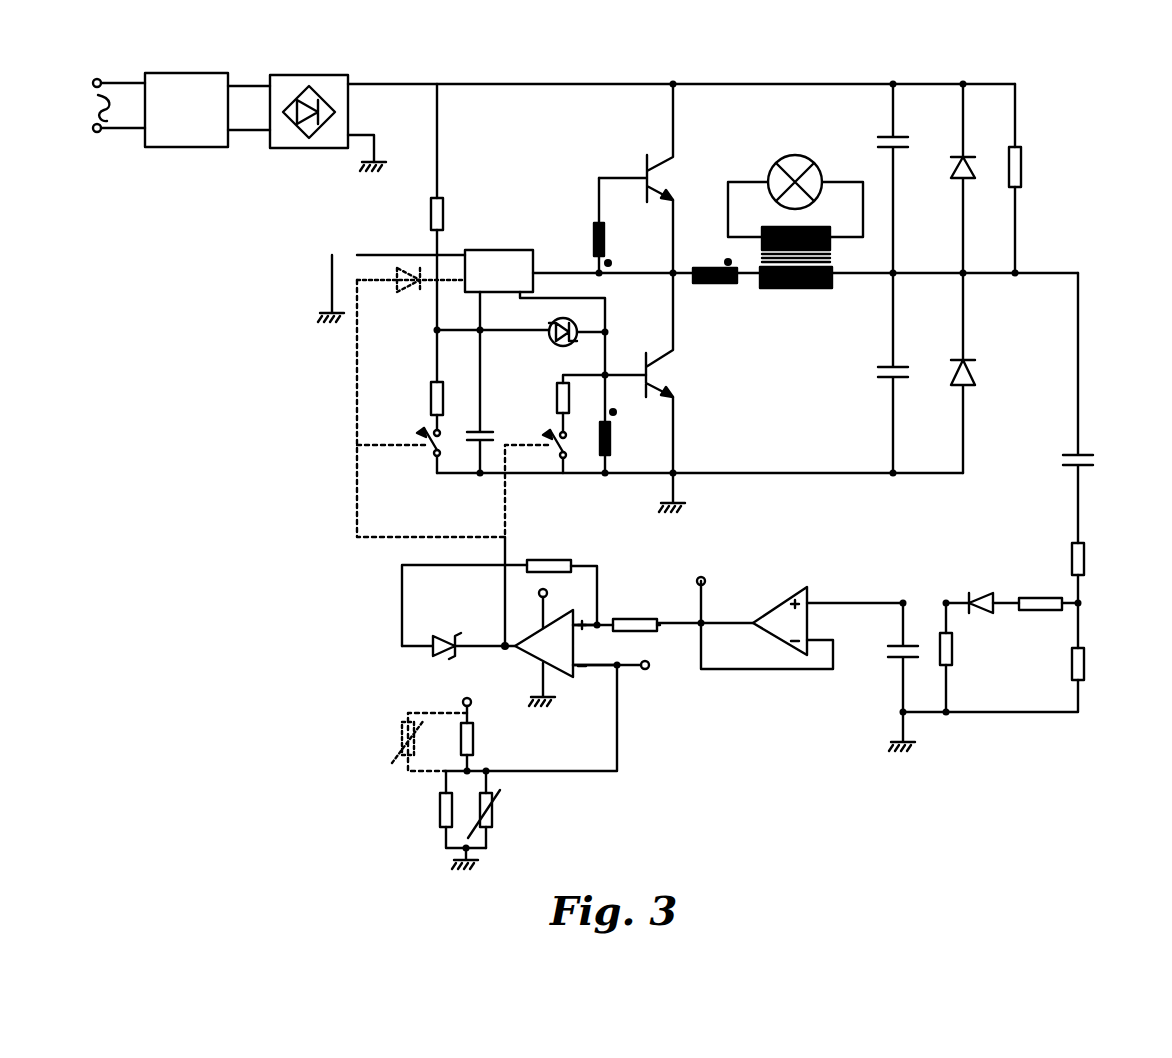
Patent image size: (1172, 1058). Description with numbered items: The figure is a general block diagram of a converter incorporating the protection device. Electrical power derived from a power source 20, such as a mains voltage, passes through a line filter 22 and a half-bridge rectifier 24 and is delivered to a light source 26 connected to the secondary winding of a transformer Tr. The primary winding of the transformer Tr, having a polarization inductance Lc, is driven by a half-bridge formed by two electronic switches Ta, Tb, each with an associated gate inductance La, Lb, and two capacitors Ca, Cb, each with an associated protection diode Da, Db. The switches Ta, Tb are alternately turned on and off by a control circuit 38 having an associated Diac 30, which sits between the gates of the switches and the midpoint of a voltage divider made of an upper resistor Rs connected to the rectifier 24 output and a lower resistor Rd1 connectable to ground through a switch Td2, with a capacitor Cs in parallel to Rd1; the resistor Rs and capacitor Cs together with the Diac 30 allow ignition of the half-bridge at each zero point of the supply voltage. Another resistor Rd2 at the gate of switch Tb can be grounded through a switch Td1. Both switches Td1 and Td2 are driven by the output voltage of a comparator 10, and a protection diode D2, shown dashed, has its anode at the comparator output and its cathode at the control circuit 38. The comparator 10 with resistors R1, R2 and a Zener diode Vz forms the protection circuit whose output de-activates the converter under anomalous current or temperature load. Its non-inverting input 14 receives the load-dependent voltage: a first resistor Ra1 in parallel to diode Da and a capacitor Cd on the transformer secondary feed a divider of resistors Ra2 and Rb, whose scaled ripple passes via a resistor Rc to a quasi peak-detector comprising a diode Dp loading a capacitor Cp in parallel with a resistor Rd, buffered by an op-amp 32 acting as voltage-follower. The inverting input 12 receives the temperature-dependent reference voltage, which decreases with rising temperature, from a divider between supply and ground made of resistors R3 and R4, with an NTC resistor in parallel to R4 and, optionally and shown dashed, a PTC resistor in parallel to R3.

The power source 20 is at (70, 110).
The line filter 22 is at (160, 93).
The half-bridge rectifier 24 is at (288, 92).
The light source 26 is at (795, 160).
The Diac 30 is at (577, 326).
The op-amp 32 is at (780, 612).
The control circuit 38 is at (496, 267).
The comparator 10 is at (584, 645).
The inverting input 12 is at (585, 672).
The non-inverting input 14 is at (585, 622).
The upper resistor Rs is at (443, 224).
The protection diode D2 is at (401, 277).
The lower resistor Rd1 is at (433, 400).
The resistor Rd2 is at (555, 408).
The capacitor Cs is at (470, 440).
The switch Td2 is at (424, 444).
The switch Td1 is at (553, 450).
The gate inductance La is at (630, 238).
The gate inductance Lb is at (608, 430).
The polarization inductance Lc is at (697, 285).
The electronic switch Ta is at (645, 169).
The electronic switch Tb is at (660, 378).
The transformer Tr is at (782, 290).
The capacitor Ca is at (908, 140).
The capacitor Cb is at (878, 365).
The capacitor Cd is at (1093, 460).
The capacitor Cp is at (888, 650).
The protection diode Da is at (975, 165).
The protection diode Db is at (975, 377).
The diode Dp is at (990, 597).
The first resistor Ra1 is at (1022, 163).
The resistor Ra2 is at (1085, 560).
The resistor Rb is at (1085, 665).
The resistor Rc is at (1045, 598).
The resistor Rd is at (953, 644).
The resistor R1 is at (630, 619).
The resistor R2 is at (547, 560).
The resistor R3 is at (474, 740).
The resistor R4 is at (439, 810).
The Zener diode Vz is at (433, 650).
The PTC resistor PTC is at (396, 748).
The NTC resistor NTC is at (516, 809).